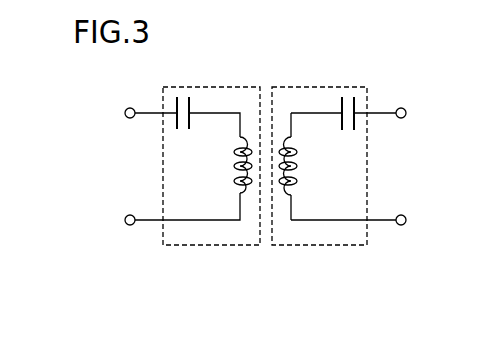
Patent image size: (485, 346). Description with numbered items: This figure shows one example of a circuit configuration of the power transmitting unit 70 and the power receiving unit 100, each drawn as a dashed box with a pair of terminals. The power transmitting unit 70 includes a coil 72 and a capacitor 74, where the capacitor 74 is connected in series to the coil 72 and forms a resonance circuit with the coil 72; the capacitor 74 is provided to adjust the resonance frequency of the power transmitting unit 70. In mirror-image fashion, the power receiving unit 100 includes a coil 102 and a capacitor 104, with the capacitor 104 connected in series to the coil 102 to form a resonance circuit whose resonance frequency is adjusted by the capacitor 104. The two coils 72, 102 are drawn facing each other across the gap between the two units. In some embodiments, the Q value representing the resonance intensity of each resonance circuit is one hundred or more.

The power transmitting unit 70 is at (235, 87).
The coil 72 is at (232, 183).
The capacitor 74 is at (190, 106).
The power receiving unit 100 is at (295, 87).
The coil 102 is at (300, 183).
The capacitor 104 is at (342, 108).